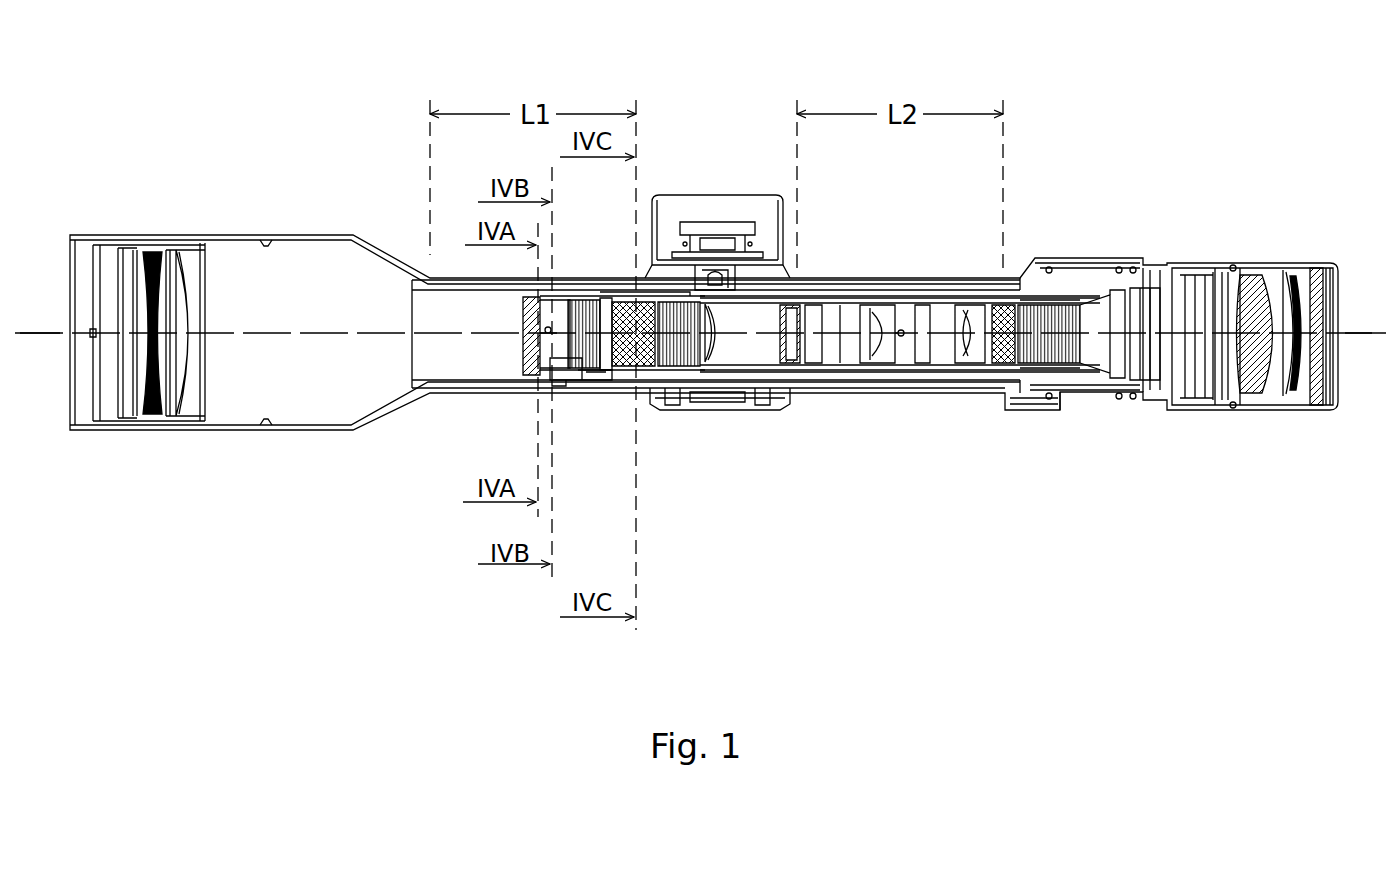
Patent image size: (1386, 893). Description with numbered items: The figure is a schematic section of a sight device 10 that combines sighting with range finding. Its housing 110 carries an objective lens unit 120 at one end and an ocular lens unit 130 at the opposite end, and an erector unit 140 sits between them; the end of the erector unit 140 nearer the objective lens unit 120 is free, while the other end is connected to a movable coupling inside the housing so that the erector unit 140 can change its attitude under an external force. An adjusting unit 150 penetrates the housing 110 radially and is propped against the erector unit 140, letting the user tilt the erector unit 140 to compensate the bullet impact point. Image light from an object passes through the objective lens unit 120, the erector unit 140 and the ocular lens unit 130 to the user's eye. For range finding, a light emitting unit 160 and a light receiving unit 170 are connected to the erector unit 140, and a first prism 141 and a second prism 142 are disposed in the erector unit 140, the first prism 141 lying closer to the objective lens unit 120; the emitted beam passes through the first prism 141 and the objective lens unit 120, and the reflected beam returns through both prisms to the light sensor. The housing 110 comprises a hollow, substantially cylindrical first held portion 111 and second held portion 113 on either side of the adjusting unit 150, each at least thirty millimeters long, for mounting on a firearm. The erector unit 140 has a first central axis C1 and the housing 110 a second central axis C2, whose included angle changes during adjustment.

The sight device 10 is at (117, 61).
The housing 110 is at (353, 226).
The first held portion 111 is at (500, 278).
The second held portion 113 is at (875, 278).
The objective lens unit 120 is at (215, 250).
The ocular lens unit 130 is at (1255, 295).
The erector unit 140 is at (898, 378).
The first prism 141 is at (520, 375).
The second prism 142 is at (683, 405).
The adjusting unit 150 is at (715, 233).
The light emitting unit 160 is at (576, 382).
The light receiving unit 170 is at (628, 296).
The first central axis C1 is at (457, 345).
The second central axis C2 is at (238, 335).